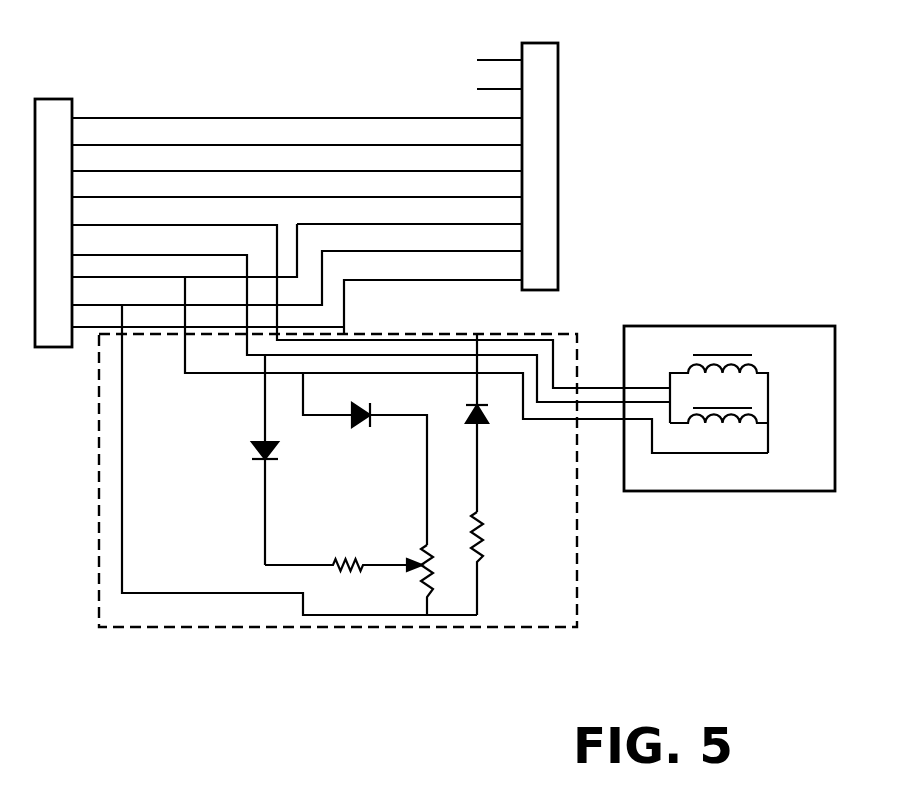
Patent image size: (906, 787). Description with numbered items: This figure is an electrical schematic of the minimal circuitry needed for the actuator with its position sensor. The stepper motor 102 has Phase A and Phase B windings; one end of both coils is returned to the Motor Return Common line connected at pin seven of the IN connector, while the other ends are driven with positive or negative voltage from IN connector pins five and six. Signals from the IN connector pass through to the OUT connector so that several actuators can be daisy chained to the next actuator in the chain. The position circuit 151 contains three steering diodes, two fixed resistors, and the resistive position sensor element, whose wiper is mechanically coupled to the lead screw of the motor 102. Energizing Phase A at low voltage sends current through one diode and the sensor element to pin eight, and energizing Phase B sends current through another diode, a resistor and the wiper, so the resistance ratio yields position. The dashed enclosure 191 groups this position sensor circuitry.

The motor 102 is at (709, 327).
The position sensor circuit 191 is at (577, 587).
The position circuit 151 is at (401, 351).